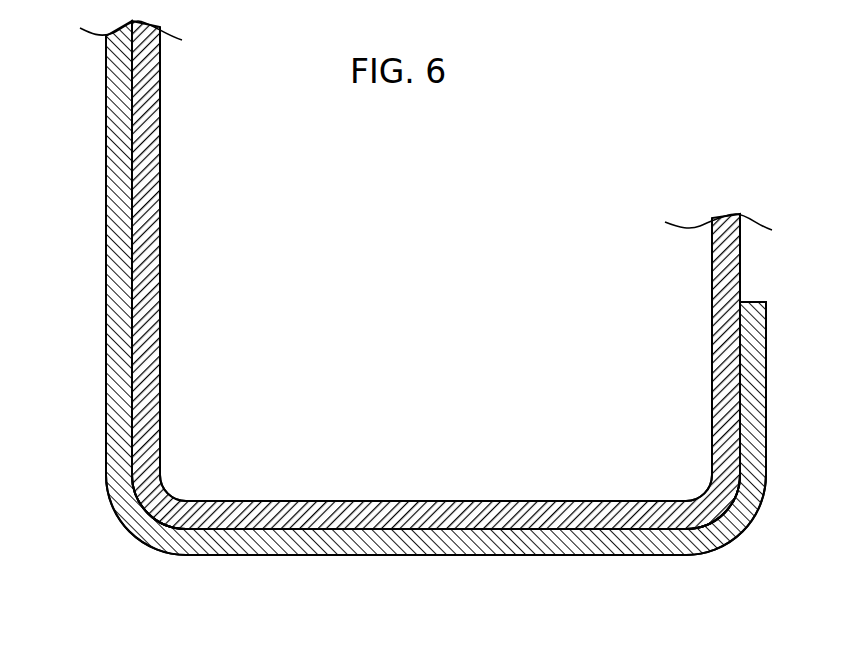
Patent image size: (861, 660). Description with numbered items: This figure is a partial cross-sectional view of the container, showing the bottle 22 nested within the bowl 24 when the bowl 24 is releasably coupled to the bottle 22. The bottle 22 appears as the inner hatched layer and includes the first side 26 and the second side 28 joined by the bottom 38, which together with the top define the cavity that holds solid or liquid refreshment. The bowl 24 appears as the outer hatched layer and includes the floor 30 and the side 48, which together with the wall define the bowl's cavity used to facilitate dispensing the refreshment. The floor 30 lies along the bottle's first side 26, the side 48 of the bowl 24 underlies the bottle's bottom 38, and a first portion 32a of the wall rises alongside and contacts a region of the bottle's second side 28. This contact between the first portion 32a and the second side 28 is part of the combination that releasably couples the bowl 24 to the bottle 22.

The bottle 22 is at (431, 325).
The bowl 24 is at (238, 561).
The first side 26 is at (160, 343).
The second side 28 is at (710, 360).
The floor 30 is at (108, 290).
The first portion of the wall 32a is at (768, 378).
The bottom 38 is at (316, 498).
The side 48 is at (558, 555).